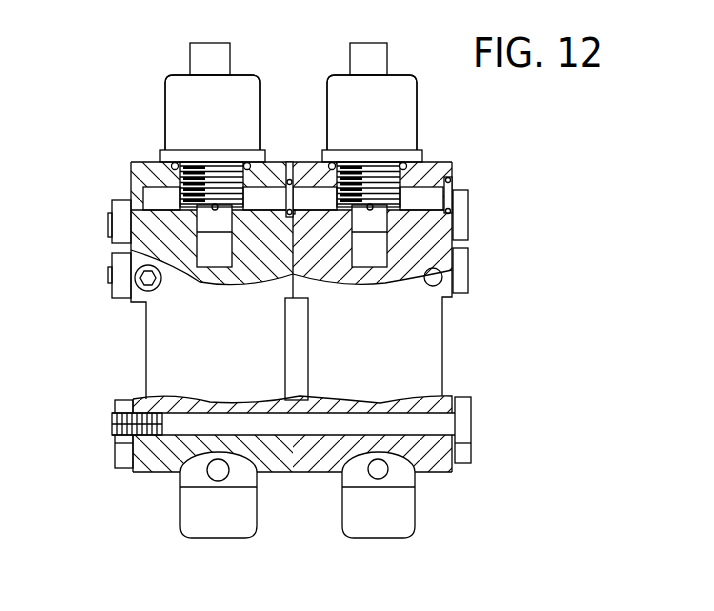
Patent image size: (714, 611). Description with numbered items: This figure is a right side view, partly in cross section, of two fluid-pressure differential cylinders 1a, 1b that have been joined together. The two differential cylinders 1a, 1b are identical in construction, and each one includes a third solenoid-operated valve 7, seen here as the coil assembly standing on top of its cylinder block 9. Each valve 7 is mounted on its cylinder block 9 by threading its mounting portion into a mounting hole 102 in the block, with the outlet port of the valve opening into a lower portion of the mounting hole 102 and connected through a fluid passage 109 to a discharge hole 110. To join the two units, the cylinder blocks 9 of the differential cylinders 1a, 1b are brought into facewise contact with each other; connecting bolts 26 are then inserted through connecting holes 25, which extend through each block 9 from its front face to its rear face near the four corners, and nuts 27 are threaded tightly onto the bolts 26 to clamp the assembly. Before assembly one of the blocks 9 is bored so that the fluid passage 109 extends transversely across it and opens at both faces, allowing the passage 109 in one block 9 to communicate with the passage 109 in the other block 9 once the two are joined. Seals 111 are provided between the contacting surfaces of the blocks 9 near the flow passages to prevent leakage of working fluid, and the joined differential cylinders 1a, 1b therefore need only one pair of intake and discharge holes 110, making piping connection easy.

The fluid-pressure differential cylinder 1a is at (150, 76).
The fluid-pressure differential cylinder 1b is at (329, 69).
The third solenoid-operated valve 7 is at (243, 88).
The cylinder block 9 is at (160, 333).
The connecting hole 25 is at (177, 432).
The connecting bolt 26 is at (460, 222).
The nut 27 is at (120, 213).
The mounting hole 102 is at (242, 210).
The fluid passage 109 is at (157, 192).
The discharge hole 110 is at (283, 193).
The seal 111 is at (289, 178).